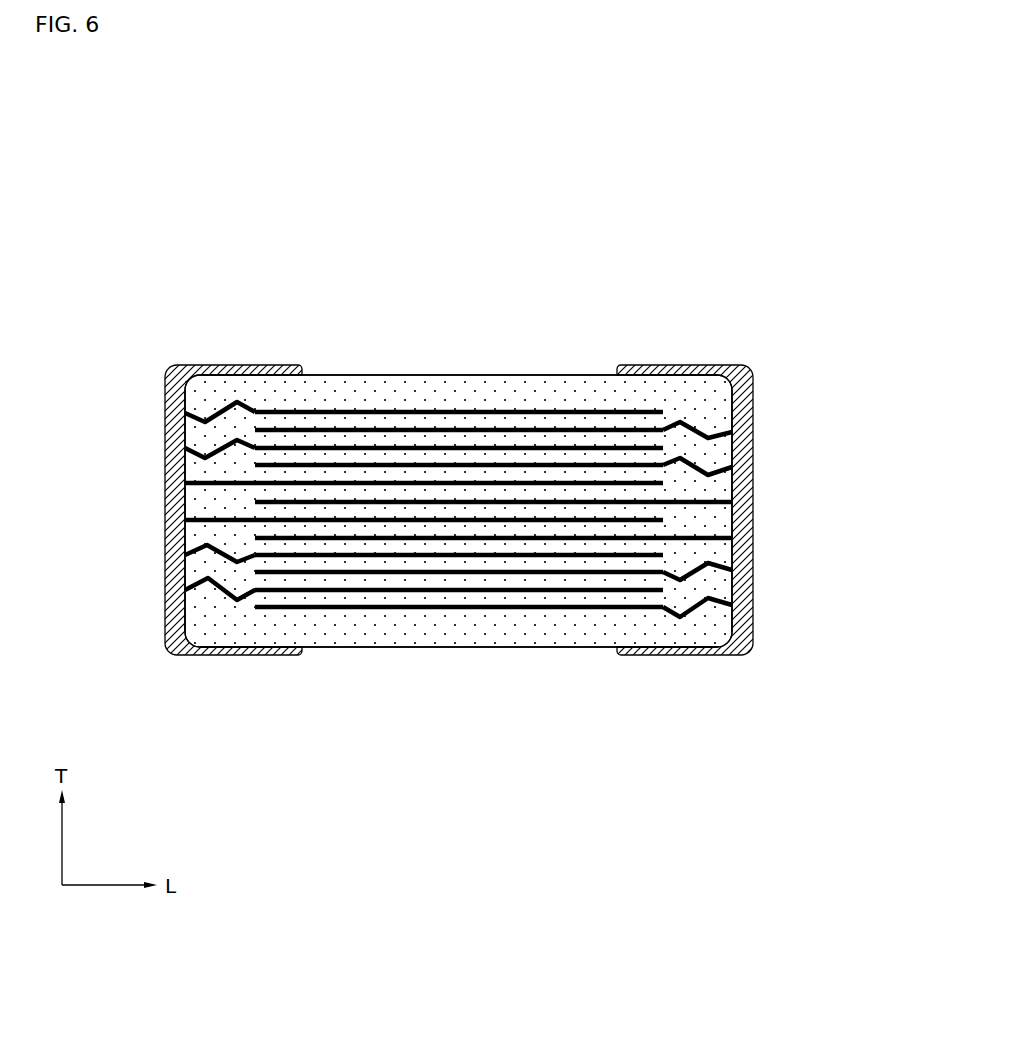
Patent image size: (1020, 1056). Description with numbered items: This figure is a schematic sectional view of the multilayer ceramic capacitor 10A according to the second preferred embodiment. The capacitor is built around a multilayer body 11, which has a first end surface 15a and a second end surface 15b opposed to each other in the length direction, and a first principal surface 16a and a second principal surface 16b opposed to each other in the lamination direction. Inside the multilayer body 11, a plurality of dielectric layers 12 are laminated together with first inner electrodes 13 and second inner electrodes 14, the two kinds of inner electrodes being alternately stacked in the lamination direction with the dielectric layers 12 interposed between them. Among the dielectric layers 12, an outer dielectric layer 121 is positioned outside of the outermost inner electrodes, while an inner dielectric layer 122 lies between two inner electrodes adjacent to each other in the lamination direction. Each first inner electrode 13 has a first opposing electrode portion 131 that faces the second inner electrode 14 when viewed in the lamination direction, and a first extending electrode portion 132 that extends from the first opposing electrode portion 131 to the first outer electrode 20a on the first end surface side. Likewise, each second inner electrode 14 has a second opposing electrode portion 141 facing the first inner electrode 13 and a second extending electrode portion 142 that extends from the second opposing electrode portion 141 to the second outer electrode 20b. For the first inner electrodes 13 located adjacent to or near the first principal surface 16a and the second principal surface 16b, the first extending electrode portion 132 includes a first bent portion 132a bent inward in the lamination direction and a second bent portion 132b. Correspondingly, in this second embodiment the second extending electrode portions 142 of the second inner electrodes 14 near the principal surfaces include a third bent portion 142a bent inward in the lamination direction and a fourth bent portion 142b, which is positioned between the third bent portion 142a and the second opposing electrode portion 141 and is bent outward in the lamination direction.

The multilayer ceramic capacitor 10A is at (620, 185).
The multilayer body 11 is at (596, 372).
The dielectric layers 12 is at (458, 491).
The outer dielectric layer 121 is at (486, 392).
The inner dielectric layer 122 is at (585, 442).
The first inner electrode 13 is at (442, 448).
The first opposing electrode portion 131 is at (325, 406).
The first extending electrode portion 132 is at (240, 392).
The first bent portion 132a is at (208, 592).
The second bent portion 132b is at (237, 607).
The second inner electrode 14 is at (395, 575).
The second opposing electrode portion 141 is at (597, 613).
The second extending electrode portion 142 is at (697, 621).
The third bent portion 142a is at (733, 463).
The fourth bent portion 142b is at (680, 417).
The first end surface 15a is at (185, 427).
The second end surface 15b is at (733, 440).
The first principal surface 16a is at (366, 374).
The second principal surface 16b is at (518, 648).
The first outer electrode 20a is at (165, 512).
The second outer electrode 20b is at (755, 542).